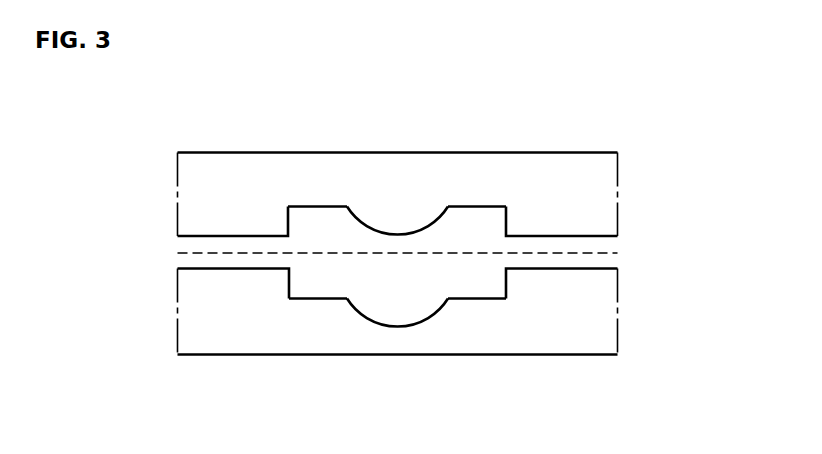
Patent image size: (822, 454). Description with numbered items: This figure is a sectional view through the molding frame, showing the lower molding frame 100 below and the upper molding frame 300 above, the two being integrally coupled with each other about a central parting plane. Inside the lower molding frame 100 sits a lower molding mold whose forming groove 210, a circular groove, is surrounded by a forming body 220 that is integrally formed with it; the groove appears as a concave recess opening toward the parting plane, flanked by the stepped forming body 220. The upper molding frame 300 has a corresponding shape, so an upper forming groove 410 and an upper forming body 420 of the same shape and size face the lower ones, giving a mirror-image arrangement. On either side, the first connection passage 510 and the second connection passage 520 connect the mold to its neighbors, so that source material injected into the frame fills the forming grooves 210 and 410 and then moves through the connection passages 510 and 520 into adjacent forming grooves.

The lower molding frame 100 is at (603, 316).
The upper molding frame 300 is at (603, 194).
The forming groove 210 is at (404, 328).
The upper forming groove 410 is at (409, 231).
The forming body 220 is at (323, 299).
The upper forming body 420 is at (323, 206).
The first connection passage 510 is at (227, 236).
The second connection passage 520 is at (563, 236).